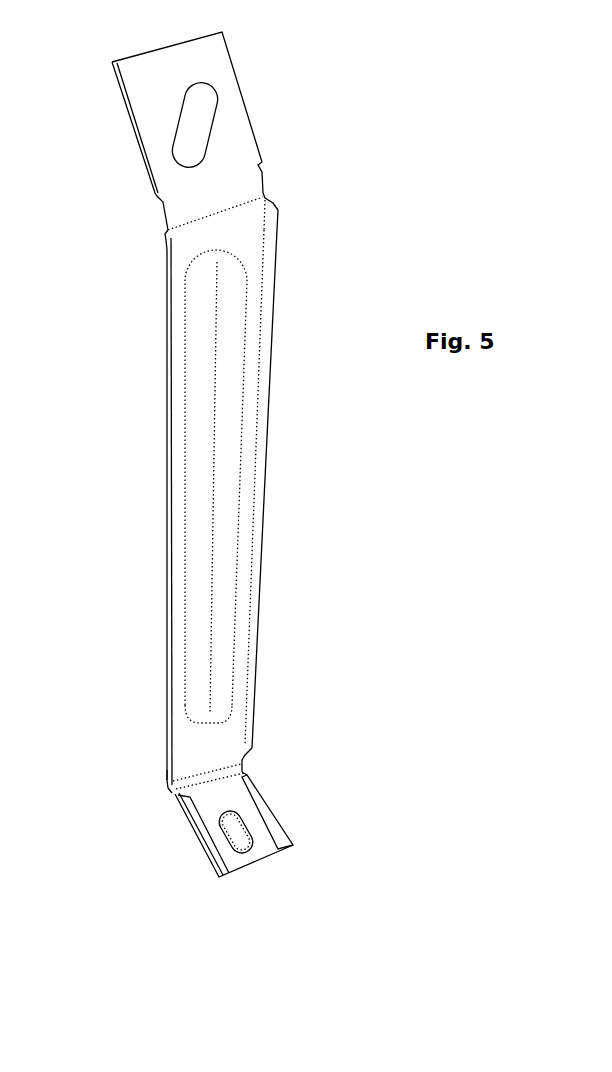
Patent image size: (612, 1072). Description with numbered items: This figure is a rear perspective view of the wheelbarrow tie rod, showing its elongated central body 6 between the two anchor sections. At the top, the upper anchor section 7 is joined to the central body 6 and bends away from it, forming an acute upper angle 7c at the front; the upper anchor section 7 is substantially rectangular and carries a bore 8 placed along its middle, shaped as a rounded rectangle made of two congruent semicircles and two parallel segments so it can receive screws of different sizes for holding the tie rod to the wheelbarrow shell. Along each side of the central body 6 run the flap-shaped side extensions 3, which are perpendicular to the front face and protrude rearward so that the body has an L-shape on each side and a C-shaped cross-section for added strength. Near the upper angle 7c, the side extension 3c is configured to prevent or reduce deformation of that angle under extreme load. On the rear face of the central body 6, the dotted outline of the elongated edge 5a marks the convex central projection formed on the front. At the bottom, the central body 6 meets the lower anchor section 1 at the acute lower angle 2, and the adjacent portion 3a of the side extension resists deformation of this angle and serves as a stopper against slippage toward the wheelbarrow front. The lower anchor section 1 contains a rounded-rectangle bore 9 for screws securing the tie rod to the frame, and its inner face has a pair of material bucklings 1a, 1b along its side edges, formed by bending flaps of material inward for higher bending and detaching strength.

The lower anchor section 1 is at (273, 864).
The material buckling 1a is at (261, 810).
The material buckling 1b is at (191, 825).
The acute lower angle 2 is at (166, 788).
The side extensions 3 is at (166, 488).
The portion of the side extension 3a is at (250, 745).
The side extension 3c is at (166, 255).
The elongated edge 5a is at (224, 593).
The central body 6 is at (206, 732).
The upper anchor section 7 is at (142, 100).
The acute upper angle 7c is at (263, 192).
The bore 8 is at (196, 139).
The bore 9 is at (237, 838).